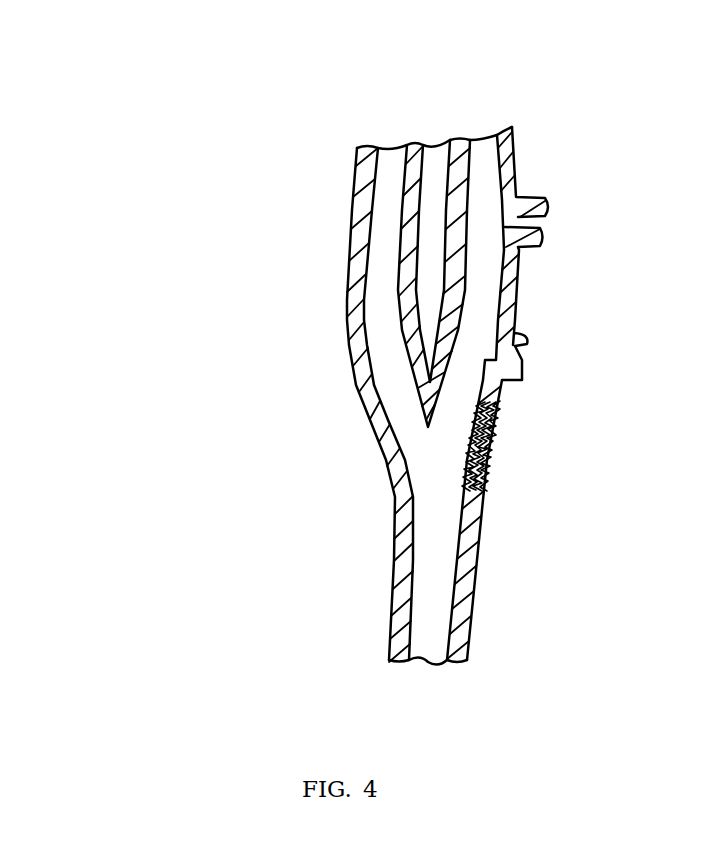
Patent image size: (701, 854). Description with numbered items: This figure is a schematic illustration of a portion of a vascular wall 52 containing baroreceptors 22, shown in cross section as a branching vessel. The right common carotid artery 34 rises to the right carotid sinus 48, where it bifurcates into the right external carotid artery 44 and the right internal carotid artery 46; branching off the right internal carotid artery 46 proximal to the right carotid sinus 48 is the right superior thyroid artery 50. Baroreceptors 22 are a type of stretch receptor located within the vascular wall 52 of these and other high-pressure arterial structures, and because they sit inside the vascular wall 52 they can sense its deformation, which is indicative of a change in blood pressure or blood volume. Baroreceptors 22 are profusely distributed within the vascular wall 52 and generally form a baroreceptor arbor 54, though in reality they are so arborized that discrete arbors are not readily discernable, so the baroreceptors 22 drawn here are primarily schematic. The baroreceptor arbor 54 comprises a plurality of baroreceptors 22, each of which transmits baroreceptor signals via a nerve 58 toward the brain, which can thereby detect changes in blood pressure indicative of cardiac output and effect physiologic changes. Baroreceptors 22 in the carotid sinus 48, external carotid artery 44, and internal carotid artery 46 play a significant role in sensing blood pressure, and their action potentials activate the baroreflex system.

The vascular wall 52 is at (357, 210).
The right external carotid artery 44 is at (387, 282).
The right internal carotid artery 46 is at (473, 293).
The right superior thyroid artery 50 is at (498, 353).
The nerve 58 is at (492, 450).
The baroreceptors 22 is at (483, 495).
The baroreceptor arbor 54 is at (700, 480).
The right carotid sinus 48 is at (366, 487).
The right common carotid artery 34 is at (437, 548).